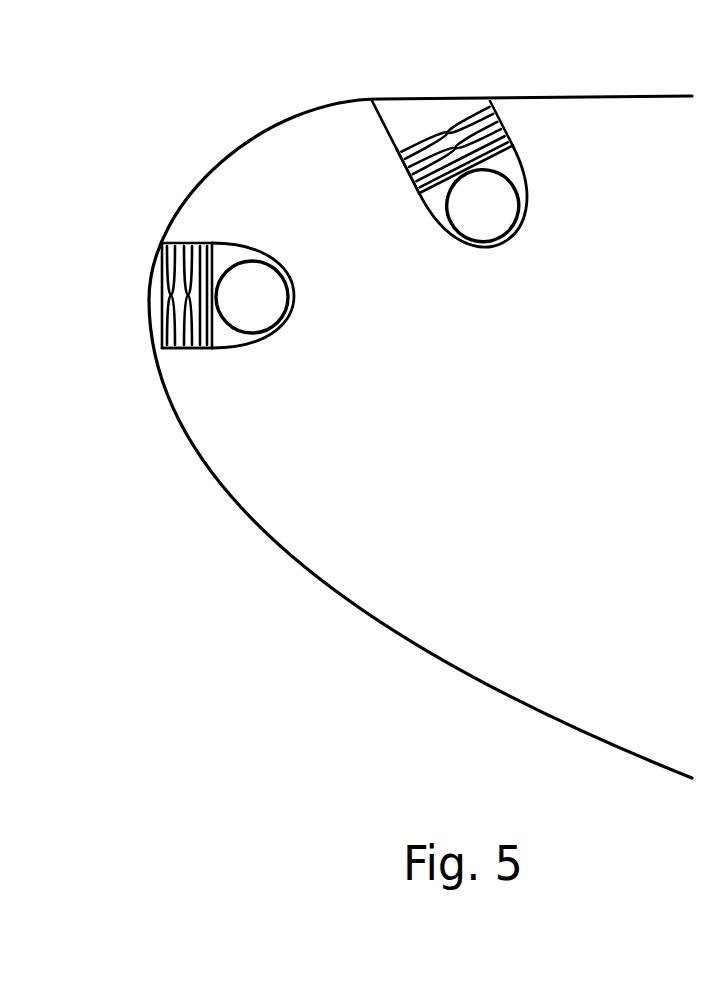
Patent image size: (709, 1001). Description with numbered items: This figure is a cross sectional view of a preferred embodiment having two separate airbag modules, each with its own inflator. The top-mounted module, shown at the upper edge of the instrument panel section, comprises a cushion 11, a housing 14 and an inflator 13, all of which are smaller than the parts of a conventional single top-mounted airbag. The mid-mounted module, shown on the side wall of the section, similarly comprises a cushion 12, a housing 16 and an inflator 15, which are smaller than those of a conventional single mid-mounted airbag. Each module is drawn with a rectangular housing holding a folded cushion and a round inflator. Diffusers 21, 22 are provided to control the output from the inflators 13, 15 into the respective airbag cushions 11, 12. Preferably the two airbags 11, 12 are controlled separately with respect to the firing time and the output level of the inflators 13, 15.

The cushion 11 is at (452, 122).
The cushion 12 is at (165, 311).
The inflator 13 is at (503, 210).
The housing 14 is at (442, 232).
The inflator 15 is at (268, 302).
The housing 16 is at (230, 349).
The diffuser 21 is at (504, 156).
The diffuser 22 is at (212, 254).